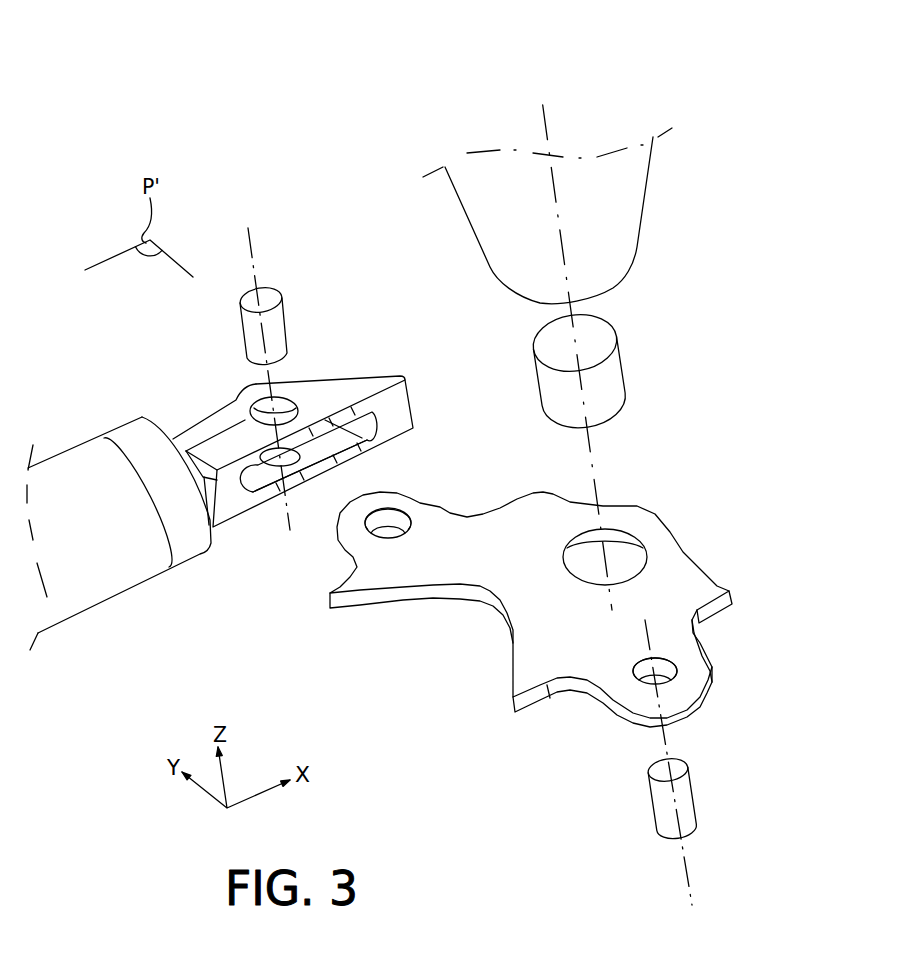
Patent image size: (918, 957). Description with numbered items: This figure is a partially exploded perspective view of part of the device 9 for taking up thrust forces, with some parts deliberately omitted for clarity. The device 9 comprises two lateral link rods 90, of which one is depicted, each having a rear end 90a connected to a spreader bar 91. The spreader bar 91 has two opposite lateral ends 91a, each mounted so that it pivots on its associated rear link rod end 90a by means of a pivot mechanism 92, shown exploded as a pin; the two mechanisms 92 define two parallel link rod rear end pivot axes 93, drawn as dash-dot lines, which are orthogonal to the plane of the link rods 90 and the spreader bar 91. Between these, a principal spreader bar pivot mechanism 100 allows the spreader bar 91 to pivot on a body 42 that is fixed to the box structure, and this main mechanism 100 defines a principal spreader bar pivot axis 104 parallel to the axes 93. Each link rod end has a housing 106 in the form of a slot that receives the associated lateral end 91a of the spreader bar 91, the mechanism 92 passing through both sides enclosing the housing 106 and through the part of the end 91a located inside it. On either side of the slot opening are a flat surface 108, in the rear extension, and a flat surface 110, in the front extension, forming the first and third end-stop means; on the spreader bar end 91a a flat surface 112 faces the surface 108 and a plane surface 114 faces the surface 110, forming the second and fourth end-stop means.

The device for taking up thrust forces 9 is at (707, 68).
The body 42 is at (633, 207).
The lateral link rod 90 is at (68, 452).
The rear end of link rod 90a is at (212, 418).
The spreader bar 91 is at (519, 591).
The lateral end of spreader bar 91a is at (403, 495).
The pivot mechanism 92 is at (275, 328).
The link rod rear end pivot axis 93 is at (248, 228).
The principal spreader bar pivot mechanism 100 is at (618, 395).
The principal spreader bar pivot axis 104 is at (543, 107).
The housing 106 is at (280, 490).
The flat surface 108 is at (402, 393).
The flat surface 110 is at (233, 497).
The flat surface 112 is at (520, 495).
The plane surface 114 is at (328, 590).